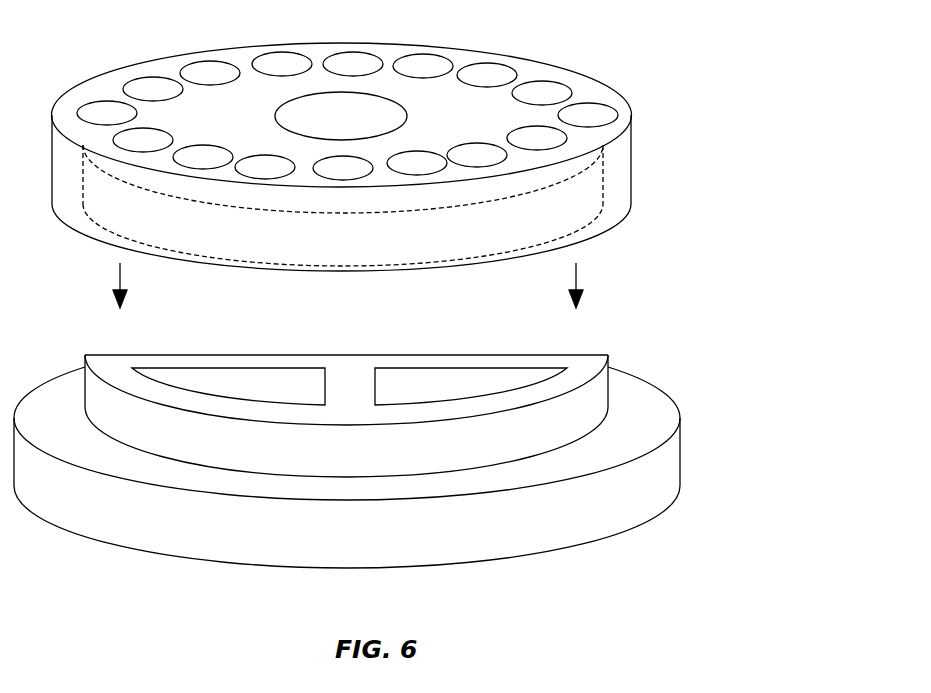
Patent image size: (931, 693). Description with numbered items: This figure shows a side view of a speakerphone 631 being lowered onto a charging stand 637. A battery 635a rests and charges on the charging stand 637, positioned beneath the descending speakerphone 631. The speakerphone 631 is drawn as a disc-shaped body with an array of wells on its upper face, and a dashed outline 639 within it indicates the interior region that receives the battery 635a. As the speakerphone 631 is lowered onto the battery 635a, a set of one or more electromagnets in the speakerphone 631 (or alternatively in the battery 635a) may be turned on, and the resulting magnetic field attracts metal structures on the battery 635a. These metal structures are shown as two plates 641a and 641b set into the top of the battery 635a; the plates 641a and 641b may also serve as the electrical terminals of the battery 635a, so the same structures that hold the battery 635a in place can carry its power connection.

The speakerphone 631 is at (666, 112).
The internal cavity of sample holder 639 is at (572, 189).
The battery 635a is at (588, 402).
The charging stand 637 is at (645, 414).
The plate 641a is at (413, 382).
The plate 641b is at (247, 378).